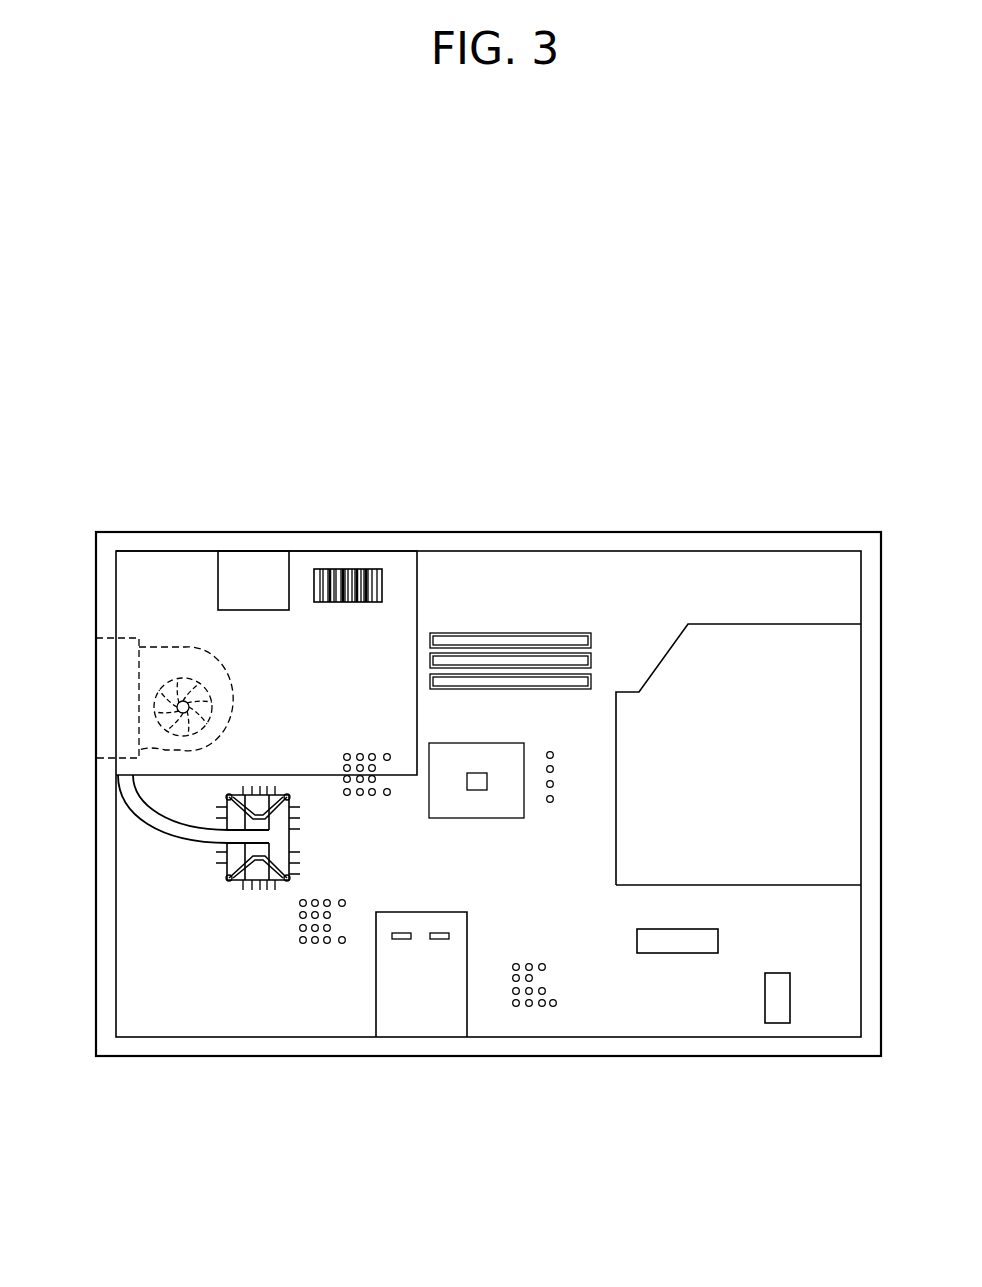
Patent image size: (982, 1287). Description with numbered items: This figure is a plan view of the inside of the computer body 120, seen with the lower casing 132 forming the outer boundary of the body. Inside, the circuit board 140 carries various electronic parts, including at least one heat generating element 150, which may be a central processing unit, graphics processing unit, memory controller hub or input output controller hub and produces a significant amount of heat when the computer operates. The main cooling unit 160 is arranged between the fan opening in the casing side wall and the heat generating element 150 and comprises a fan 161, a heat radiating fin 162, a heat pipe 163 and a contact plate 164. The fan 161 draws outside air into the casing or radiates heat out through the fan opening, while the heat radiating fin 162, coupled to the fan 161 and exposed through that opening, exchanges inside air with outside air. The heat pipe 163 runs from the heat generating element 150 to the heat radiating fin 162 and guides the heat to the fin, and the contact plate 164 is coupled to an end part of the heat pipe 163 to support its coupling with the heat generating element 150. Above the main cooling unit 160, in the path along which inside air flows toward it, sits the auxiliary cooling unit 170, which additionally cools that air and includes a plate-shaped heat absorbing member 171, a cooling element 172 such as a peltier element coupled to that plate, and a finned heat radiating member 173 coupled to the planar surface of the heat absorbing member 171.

The computer body 120 is at (90, 371).
The lower casing 132 is at (661, 548).
The circuit board 140 is at (737, 580).
The heat generating element 150 is at (286, 848).
The main cooling unit 160 is at (292, 1135).
The fan 161 is at (177, 742).
The heat radiating fin 162 is at (125, 742).
The heat pipe 163 is at (232, 835).
The contact plate 164 is at (279, 842).
The auxiliary cooling unit 170 is at (182, 450).
The heat absorbing member 171 is at (172, 578).
The cooling element 172 is at (252, 573).
The heat radiating member 173 is at (338, 577).